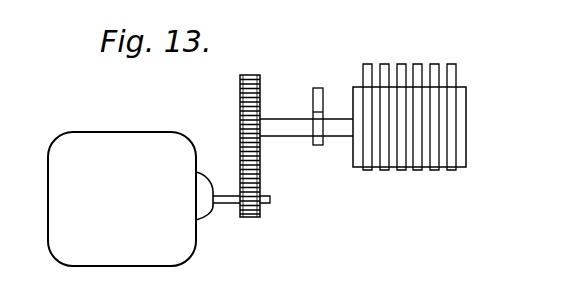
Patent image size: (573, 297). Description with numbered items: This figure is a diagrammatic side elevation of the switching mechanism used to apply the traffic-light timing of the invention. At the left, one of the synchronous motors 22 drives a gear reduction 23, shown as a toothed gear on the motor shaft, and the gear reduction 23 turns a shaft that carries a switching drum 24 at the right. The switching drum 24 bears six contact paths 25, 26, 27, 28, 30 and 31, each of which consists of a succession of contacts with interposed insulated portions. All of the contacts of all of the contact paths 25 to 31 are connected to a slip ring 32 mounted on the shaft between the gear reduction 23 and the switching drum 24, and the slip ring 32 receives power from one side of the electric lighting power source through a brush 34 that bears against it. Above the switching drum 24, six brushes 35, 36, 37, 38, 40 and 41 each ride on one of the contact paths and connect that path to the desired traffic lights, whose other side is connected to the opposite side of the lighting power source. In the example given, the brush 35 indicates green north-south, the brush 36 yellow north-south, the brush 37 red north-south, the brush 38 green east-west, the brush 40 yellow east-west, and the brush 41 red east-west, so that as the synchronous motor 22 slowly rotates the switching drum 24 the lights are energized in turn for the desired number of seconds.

The synchronous motor 22 is at (159, 199).
The gear reduction 23 is at (248, 133).
The switching drum 24 is at (418, 121).
The contact path 25 is at (370, 168).
The contact path 26 is at (386, 170).
The contact path 27 is at (404, 170).
The contact path 28 is at (421, 169).
The contact path 30 is at (437, 170).
The contact path 31 is at (456, 168).
The slip ring 32 is at (319, 143).
The brush 34 is at (315, 98).
The brush 35 is at (367, 64).
The brush 36 is at (385, 64).
The brush 37 is at (401, 64).
The brush 38 is at (418, 64).
The brush 40 is at (436, 64).
The brush 41 is at (452, 64).